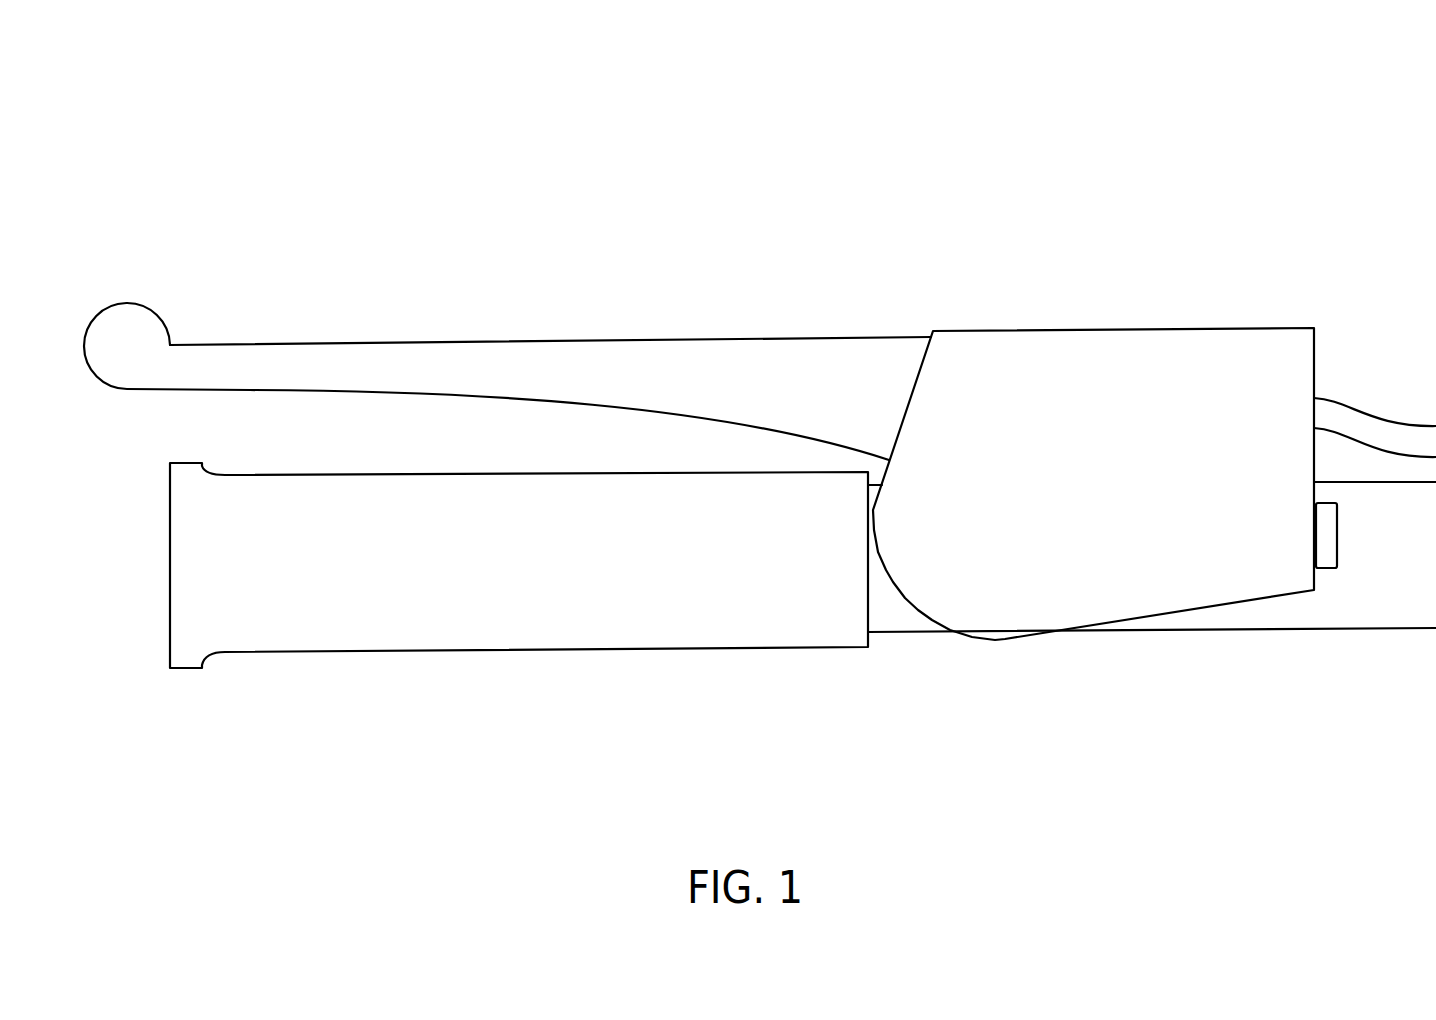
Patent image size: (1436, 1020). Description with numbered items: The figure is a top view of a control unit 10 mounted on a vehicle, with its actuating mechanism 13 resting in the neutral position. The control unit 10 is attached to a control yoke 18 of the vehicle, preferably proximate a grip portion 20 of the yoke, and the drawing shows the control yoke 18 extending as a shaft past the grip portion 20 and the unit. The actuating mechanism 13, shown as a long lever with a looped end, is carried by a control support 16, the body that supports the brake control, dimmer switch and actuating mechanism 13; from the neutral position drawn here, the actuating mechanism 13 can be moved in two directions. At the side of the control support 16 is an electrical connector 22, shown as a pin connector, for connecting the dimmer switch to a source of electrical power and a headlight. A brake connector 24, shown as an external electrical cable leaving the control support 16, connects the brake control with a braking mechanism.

The control unit 10 is at (1303, 76).
The actuating mechanism 13 is at (290, 329).
The control support 16 is at (1114, 314).
The control yoke 18 is at (1227, 644).
The grip portion 20 is at (344, 667).
The electrical connector 22 is at (1324, 586).
The brake connector 24 is at (1361, 399).